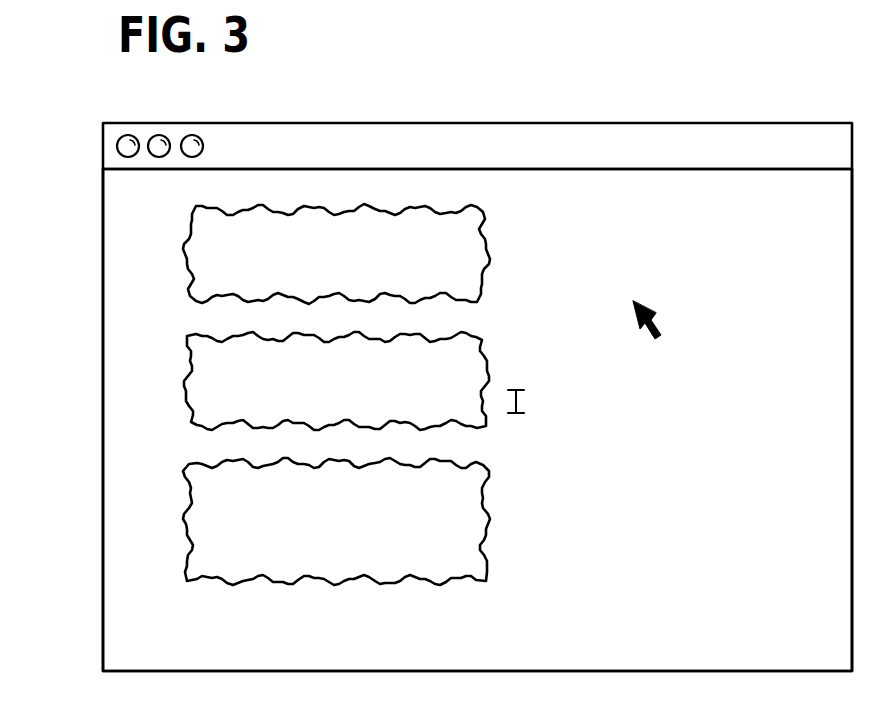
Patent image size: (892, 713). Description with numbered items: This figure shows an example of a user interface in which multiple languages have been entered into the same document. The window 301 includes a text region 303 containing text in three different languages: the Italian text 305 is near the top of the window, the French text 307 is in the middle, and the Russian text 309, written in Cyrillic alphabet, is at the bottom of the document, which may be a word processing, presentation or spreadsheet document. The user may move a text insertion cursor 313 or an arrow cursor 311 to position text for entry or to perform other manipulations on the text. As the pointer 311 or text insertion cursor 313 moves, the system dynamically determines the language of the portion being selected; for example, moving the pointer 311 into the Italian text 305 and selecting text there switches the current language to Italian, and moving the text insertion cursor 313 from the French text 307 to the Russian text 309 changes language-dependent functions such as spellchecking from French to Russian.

The window 301 is at (459, 119).
The text region 303 is at (127, 377).
The Italian text 305 is at (456, 243).
The French text 307 is at (416, 352).
The Russian text 309 is at (398, 477).
The arrow cursor 311 is at (663, 326).
The text insertion cursor 313 is at (527, 409).